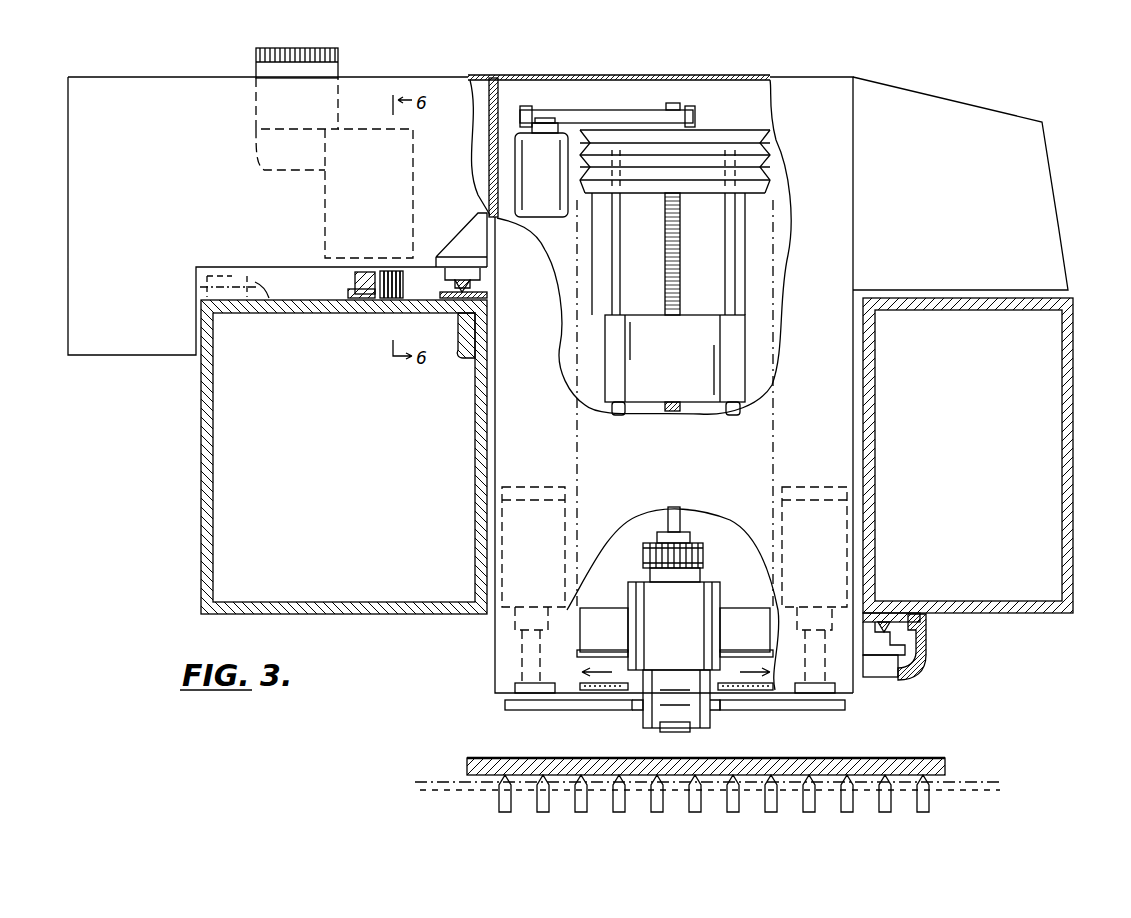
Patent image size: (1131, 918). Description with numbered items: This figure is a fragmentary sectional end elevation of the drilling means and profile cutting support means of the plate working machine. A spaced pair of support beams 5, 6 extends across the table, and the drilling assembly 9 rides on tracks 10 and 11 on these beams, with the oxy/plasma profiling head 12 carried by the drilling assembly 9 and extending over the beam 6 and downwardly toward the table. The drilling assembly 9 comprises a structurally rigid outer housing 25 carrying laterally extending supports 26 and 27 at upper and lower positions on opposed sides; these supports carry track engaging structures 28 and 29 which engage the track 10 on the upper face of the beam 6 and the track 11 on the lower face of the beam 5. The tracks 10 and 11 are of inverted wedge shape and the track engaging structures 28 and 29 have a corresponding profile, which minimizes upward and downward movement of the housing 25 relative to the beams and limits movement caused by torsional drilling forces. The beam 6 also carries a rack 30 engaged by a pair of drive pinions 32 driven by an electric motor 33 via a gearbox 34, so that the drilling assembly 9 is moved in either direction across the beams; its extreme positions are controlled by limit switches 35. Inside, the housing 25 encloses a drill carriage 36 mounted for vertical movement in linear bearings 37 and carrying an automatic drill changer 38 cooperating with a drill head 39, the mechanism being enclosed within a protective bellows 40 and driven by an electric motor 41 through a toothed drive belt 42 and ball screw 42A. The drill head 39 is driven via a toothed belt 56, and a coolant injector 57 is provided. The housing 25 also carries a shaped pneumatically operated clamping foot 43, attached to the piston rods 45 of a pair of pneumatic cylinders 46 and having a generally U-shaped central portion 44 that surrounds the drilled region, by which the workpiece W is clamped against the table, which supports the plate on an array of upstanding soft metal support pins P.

The support beam 5 is at (968, 455).
The support beam 6 is at (343, 445).
The drilling assembly 9 is at (491, 452).
The track 10 is at (467, 337).
The track 11 is at (887, 630).
The oxy/plasma profiling head 12 is at (164, 358).
The outer housing 25 is at (855, 430).
The support 26 is at (457, 234).
The support 27 is at (885, 672).
The track engaging structure 28 is at (473, 273).
The track engaging structure 29 is at (900, 638).
The rack 30 is at (347, 282).
The drive pinions 32 is at (382, 300).
The electric motor 33 is at (275, 100).
The gearbox 34 is at (345, 186).
The limit switch 35 is at (272, 313).
The drill carriage 36 is at (675, 365).
The linear bearings 37 is at (613, 307).
The automatic drill changer 38 is at (675, 629).
The drill head 39 is at (708, 722).
The protective bellows 40 is at (753, 177).
The electric motor 41 is at (537, 162).
The toothed drive belt 42 is at (604, 120).
The ball screw 42A is at (668, 247).
The clamping foot 43 is at (505, 705).
The U-shaped central portion 44 is at (638, 713).
The piston rods 45 is at (520, 665).
The pneumatic cylinders 46 is at (523, 536).
The toothed belt 56 is at (640, 553).
The coolant injector 57 is at (680, 520).
The workpiece W is at (488, 757).
The support pins P is at (580, 773).